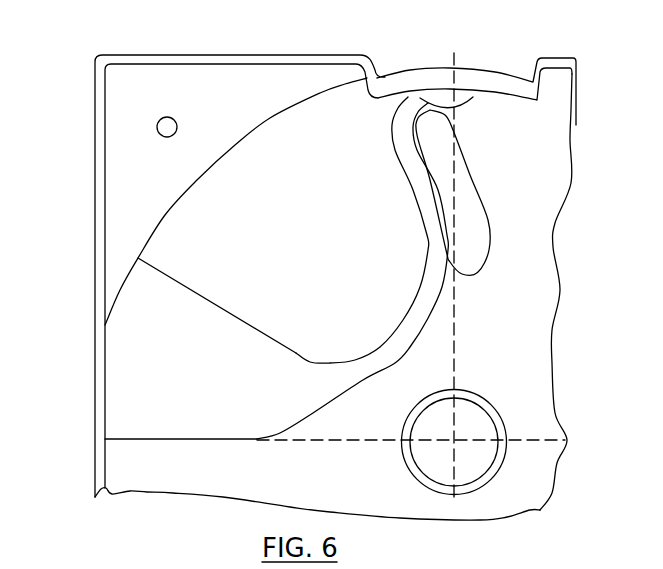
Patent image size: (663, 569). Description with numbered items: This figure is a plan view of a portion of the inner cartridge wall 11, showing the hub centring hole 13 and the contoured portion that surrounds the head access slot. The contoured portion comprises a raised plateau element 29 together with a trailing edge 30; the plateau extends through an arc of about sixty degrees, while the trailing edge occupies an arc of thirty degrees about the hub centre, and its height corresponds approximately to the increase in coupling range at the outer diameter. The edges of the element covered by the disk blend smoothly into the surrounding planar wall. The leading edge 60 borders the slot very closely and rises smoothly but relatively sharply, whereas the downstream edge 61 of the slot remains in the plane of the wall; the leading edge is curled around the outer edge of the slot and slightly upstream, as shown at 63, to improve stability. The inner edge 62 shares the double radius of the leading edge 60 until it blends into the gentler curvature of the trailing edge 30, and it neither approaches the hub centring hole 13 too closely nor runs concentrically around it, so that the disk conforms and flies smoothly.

The cartridge wall 11 is at (149, 54).
The hub centring hole 13 is at (511, 392).
The element 29 is at (163, 247).
The trailing edge 30 is at (167, 434).
The leading edge 60 is at (412, 155).
The downstream edge of slot 61 is at (440, 188).
The inner edge 62 is at (393, 347).
The curled leading edge portion 63 is at (421, 108).